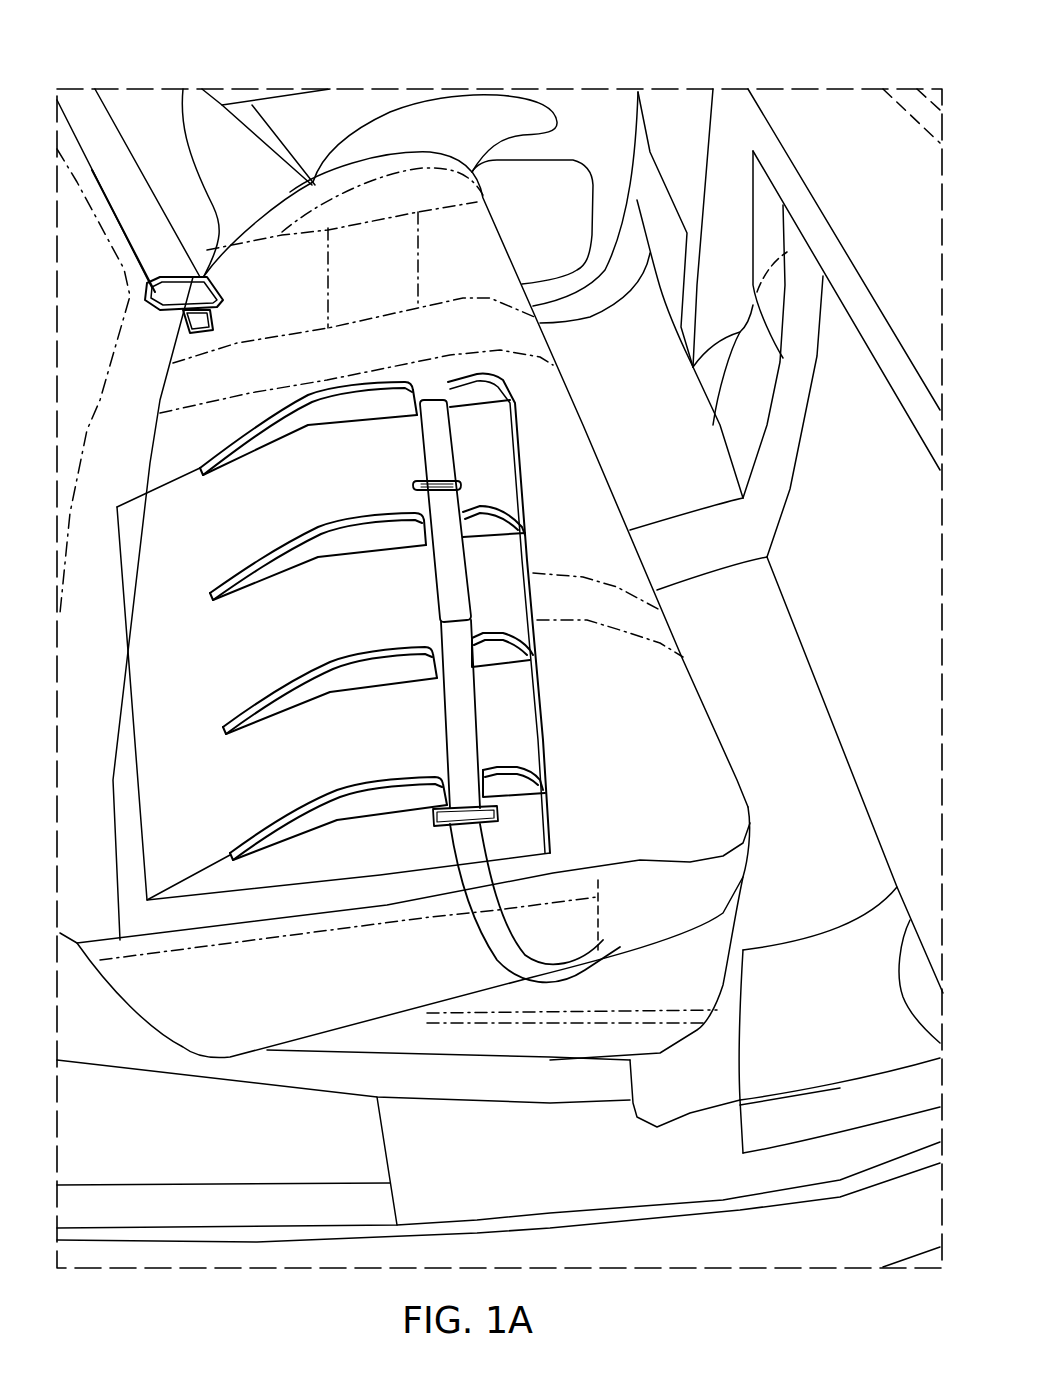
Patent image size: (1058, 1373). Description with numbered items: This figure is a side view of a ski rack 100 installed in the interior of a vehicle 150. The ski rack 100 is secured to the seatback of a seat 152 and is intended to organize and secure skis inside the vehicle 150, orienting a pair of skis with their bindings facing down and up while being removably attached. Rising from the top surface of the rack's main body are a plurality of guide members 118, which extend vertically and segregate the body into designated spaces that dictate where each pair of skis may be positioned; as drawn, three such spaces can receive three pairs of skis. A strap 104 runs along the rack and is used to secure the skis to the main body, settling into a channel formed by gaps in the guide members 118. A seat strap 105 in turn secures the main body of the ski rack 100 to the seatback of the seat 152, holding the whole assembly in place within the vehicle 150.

The ski rack 100 is at (257, 792).
The strap 104 is at (457, 717).
The seat strap 105 is at (493, 943).
The guide members 118 is at (383, 393).
The vehicle 150 is at (500, 89).
The seat 152 is at (690, 907).